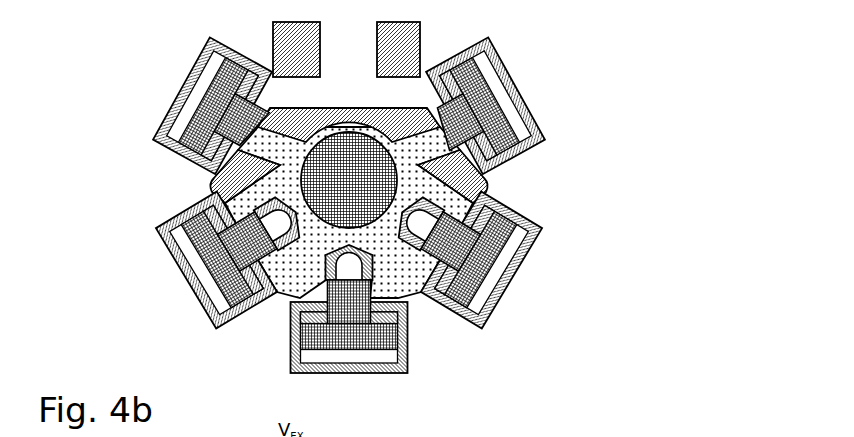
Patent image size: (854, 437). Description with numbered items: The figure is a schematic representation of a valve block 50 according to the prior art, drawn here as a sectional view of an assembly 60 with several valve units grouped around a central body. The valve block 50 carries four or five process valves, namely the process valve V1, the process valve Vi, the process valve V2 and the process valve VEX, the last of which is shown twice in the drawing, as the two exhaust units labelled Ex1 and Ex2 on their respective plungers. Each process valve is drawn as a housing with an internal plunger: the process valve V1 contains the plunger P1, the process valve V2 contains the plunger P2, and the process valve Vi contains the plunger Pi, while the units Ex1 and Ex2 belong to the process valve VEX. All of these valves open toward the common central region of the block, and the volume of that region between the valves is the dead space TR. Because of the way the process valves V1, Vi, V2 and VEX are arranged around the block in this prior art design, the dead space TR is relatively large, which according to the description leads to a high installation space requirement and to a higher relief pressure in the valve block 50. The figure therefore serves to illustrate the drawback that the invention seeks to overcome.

The rotary valve assembly 60 is at (503, 19).
The dead space TR is at (390, 270).
The process valve VEX is at (344, 109).
The exhaust valve plunger 2 Ex2 is at (220, 109).
The exhaust valve plunger 1 Ex1 is at (478, 109).
The process valve V1 is at (228, 245).
The piston 1 P1 is at (143, 280).
The process valve V2 is at (471, 245).
The piston 2 P2 is at (553, 280).
The process valve Vi is at (297, 314).
The inlet piston Pi is at (349, 309).
The valve block 50 is at (606, 432).